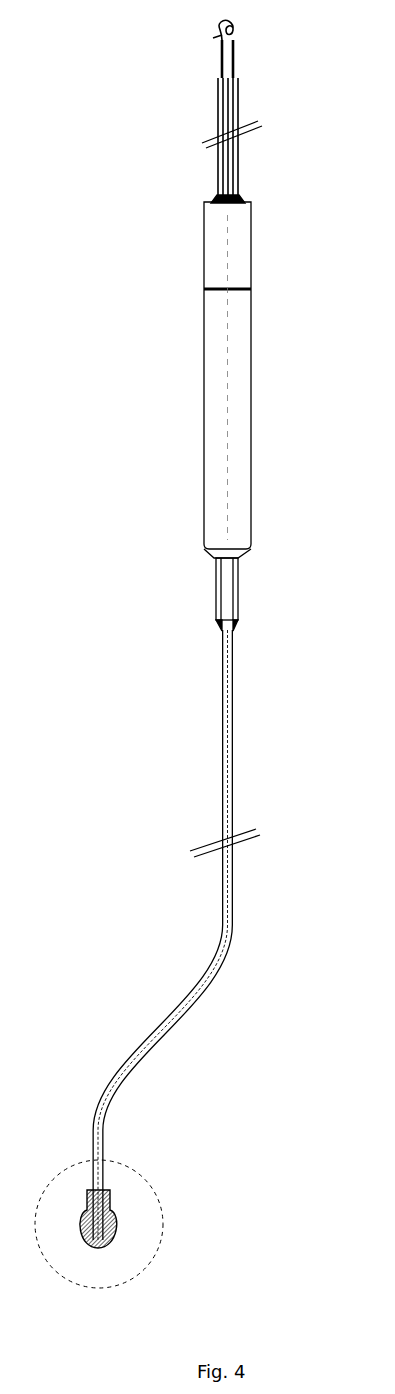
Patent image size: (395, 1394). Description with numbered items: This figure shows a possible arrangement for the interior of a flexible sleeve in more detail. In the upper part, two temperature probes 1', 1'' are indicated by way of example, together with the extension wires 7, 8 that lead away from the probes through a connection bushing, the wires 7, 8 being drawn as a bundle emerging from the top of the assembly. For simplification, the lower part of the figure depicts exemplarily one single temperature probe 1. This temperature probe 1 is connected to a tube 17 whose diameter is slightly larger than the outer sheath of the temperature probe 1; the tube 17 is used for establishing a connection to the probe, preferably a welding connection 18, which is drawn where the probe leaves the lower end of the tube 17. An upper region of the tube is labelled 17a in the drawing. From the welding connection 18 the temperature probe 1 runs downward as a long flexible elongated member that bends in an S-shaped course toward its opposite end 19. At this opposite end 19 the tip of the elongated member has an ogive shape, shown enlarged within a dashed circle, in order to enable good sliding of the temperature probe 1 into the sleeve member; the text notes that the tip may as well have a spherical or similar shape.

The extension wire 7 is at (252, 20).
The extension wire 8 is at (230, 27).
The temperature probe 1' is at (200, 119).
The temperature probe 1'' is at (259, 119).
The handle upper part 17a is at (287, 241).
The tube 17 is at (296, 470).
The welding connection 18 is at (283, 606).
The temperature probe 1 is at (196, 935).
The opposite end 19 is at (116, 1240).